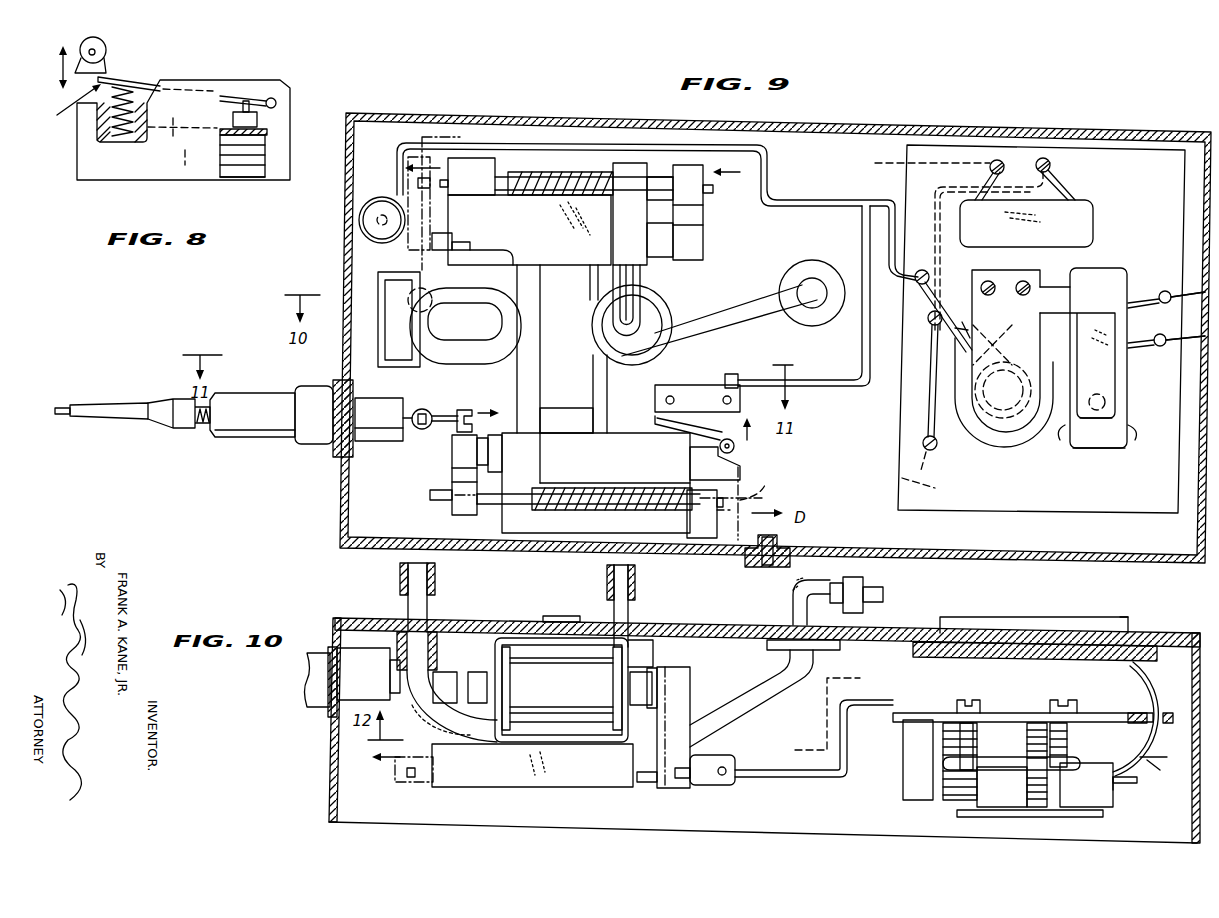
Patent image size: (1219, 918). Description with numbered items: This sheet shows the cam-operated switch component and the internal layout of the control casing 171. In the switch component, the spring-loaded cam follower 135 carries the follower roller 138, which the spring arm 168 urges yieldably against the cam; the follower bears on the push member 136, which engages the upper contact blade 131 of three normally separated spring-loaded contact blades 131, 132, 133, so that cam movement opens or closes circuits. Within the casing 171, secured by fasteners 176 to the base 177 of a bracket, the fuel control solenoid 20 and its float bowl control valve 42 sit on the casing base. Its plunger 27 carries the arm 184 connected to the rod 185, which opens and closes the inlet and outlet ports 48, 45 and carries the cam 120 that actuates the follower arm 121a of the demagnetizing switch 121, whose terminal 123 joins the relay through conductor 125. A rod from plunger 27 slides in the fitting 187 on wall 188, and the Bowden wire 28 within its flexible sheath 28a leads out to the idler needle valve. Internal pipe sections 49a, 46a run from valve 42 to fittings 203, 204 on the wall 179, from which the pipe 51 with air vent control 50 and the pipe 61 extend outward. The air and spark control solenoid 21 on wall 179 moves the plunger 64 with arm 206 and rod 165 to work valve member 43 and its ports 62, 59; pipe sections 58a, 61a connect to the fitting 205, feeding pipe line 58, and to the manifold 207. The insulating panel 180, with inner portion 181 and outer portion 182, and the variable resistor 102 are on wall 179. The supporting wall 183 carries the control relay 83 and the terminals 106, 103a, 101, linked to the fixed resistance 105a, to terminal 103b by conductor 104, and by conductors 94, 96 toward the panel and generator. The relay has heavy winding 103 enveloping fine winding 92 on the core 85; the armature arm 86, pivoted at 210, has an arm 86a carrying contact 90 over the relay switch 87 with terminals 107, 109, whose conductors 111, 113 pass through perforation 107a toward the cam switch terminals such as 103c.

In FIG. 8, the follower roller 138 is at (108, 47).
In FIG. 8, the spring arm 168 is at (152, 84).
In FIG. 8, the push member 136 is at (240, 97).
In FIG. 8, the cam follower 135 is at (66, 111).
In FIG. 8, the contact blade 131 is at (265, 152).
In FIG. 8, the contact blade 132 is at (267, 160).
In FIG. 8, the contact blade 133 is at (260, 178).
In FIG. 9, the control casing 171 is at (958, 128).
In FIG. 10, the control casing 171 is at (358, 616).
In FIG. 9, the variable resistor 102 is at (368, 237).
In FIG. 9, the valve member 43 is at (552, 211).
In FIG. 10, the valve member 43 is at (505, 787).
In FIG. 9, the inlet port 62 is at (590, 268).
In FIG. 9, the intake connection 59 is at (630, 268).
In FIG. 9, the plunger 64 is at (705, 244).
In FIG. 10, the plunger 64 is at (690, 678).
In FIG. 9, the arm 206 is at (704, 210).
In FIG. 10, the arm 206 is at (680, 706).
In FIG. 9, the rod 165 is at (714, 191).
In FIG. 10, the rod 165 is at (643, 790).
In FIG. 9, the fitting 205 is at (655, 316).
In FIG. 10, the fitting 205 is at (632, 617).
In FIG. 9, the internal pipe section 58a is at (645, 286).
In FIG. 9, the internal pipe section 61a is at (603, 314).
In FIG. 9, the internal pipe section 49a is at (742, 318).
In FIG. 10, the internal pipe section 49a is at (762, 714).
In FIG. 9, the fitting 203 is at (820, 264).
In FIG. 10, the fitting 203 is at (792, 622).
In FIG. 9, the conductor 125 is at (860, 342).
In FIG. 10, the conductor 125 is at (805, 781).
In FIG. 9, the terminal 123 is at (738, 375).
In FIG. 9, the switch 121 is at (741, 412).
In FIG. 10, the switch 121 is at (720, 791).
In FIG. 9, the follower arm 121a is at (676, 429).
In FIG. 9, the cam 120 is at (745, 456).
In FIG. 9, the valve 42 is at (600, 485).
In FIG. 9, the outlet port 45 is at (527, 434).
In FIG. 9, the inlet port 48 is at (605, 430).
In FIG. 9, the fuel control solenoid 20 is at (583, 402).
In FIG. 9, the internal pipe section 46a is at (483, 295).
In FIG. 10, the internal pipe section 46a is at (450, 727).
In FIG. 9, the fitting 204 is at (452, 336).
In FIG. 10, the fitting 204 is at (430, 607).
In FIG. 9, the manifold 207 is at (380, 286).
In FIG. 10, the manifold 207 is at (440, 670).
In FIG. 9, the fitting 187 is at (380, 424).
In FIG. 9, the plunger 27 is at (478, 446).
In FIG. 9, the arm 184 is at (455, 508).
In FIG. 9, the rod 185 is at (430, 496).
In FIG. 9, the wall 188 is at (333, 482).
In FIG. 9, the Bowden wire 28 is at (64, 418).
In FIG. 9, the flexible sheath 28a is at (130, 420).
In FIG. 9, the base 177 is at (745, 563).
In FIG. 9, the fasteners 176 is at (765, 566).
In FIG. 9, the supporting wall 183 is at (1082, 150).
In FIG. 10, the supporting wall 183 is at (900, 727).
In FIG. 9, the terminal 106 is at (1000, 160).
In FIG. 9, the terminal 103a is at (1050, 166).
In FIG. 9, the conductor 104 is at (942, 259).
In FIG. 9, the fixed resistance 105a is at (1093, 231).
In FIG. 10, the fixed resistance 105a is at (978, 761).
In FIG. 9, the fine wire coil 92 is at (1018, 344).
In FIG. 9, the pivot 210 is at (1016, 274).
In FIG. 9, the heavy wire coil 103 is at (980, 424).
In FIG. 9, the core 85 is at (1022, 439).
In FIG. 9, the control relay 83 is at (1120, 268).
In FIG. 10, the control relay 83 is at (938, 808).
In FIG. 9, the armature arm 86a is at (1128, 432).
In FIG. 9, the relay switch 87 is at (1105, 449).
In FIG. 9, the contact 90 is at (1078, 420).
In FIG. 9, the terminal 109 is at (1112, 397).
In FIG. 9, the terminal 107 is at (1164, 292).
In FIG. 10, the terminal 107 is at (1122, 786).
In FIG. 9, the conductor 113 is at (1158, 347).
In FIG. 10, the conductor 113 is at (1148, 761).
In FIG. 9, the conductor 111 is at (1170, 290).
In FIG. 10, the conductor 111 is at (1140, 757).
In FIG. 9, the terminal 101 is at (922, 285).
In FIG. 9, the conductor 96 is at (958, 332).
In FIG. 9, the terminal 103b is at (930, 336).
In FIG. 9, the terminal 103c is at (926, 436).
In FIG. 9, the conductor 94 is at (933, 471).
In FIG. 10, the wall 179 is at (518, 619).
In FIG. 10, the pipe 61 is at (436, 577).
In FIG. 10, the pipe line 58 is at (637, 580).
In FIG. 10, the air and spark control solenoid 21 is at (574, 690).
In FIG. 10, the air vent control 50 is at (840, 606).
In FIG. 10, the pipe 51 is at (872, 604).
In FIG. 10, the outer panel portion 182 is at (972, 613).
In FIG. 10, the insulating panel 180 is at (1128, 620).
In FIG. 10, the inner panel portion 181 is at (912, 660).
In FIG. 10, the perforation 107a is at (1137, 717).
In FIG. 10, the armature arm 86 is at (1040, 813).